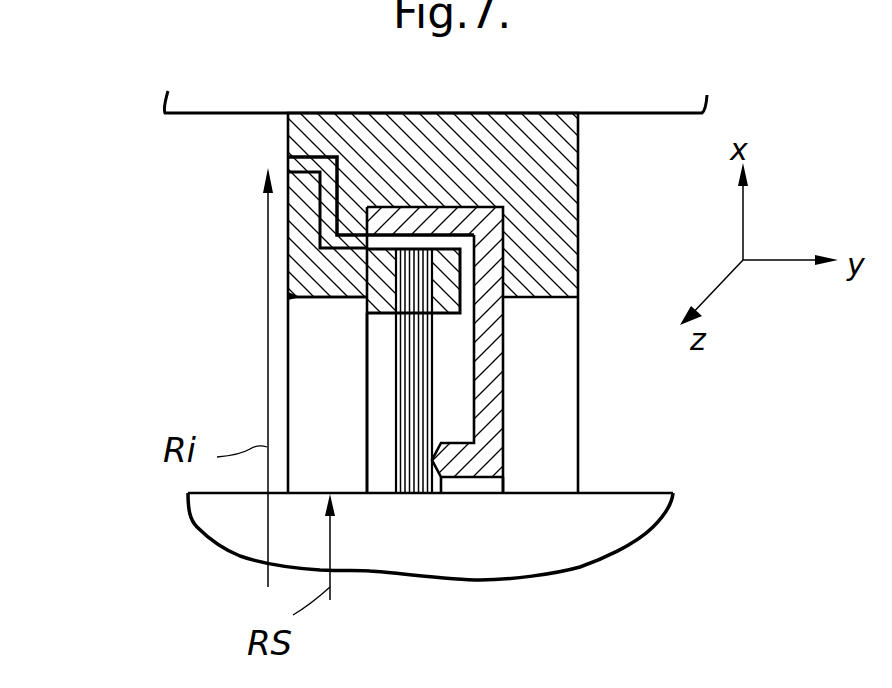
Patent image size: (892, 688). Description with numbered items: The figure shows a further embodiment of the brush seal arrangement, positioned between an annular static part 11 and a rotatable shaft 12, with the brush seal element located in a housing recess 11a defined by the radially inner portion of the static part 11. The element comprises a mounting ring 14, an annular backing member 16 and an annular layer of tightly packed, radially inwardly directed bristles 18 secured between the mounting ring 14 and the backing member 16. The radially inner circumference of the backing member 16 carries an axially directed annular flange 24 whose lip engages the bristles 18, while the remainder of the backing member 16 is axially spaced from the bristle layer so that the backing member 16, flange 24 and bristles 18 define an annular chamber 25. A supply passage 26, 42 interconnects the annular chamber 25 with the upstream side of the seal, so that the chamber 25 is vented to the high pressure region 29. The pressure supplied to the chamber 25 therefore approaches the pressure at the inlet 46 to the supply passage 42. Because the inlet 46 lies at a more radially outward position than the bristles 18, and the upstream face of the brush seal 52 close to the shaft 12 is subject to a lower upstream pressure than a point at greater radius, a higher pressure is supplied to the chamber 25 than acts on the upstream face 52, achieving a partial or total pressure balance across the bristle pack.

The annular static part 11 is at (507, 172).
The inlet 46 is at (300, 157).
The supply passage 42 is at (330, 202).
The housing recess 11a is at (300, 296).
The mounting ring 14 is at (378, 303).
The bristles 18 is at (396, 470).
The annular backing member 16 is at (490, 395).
The supply passage 26 is at (468, 273).
The annular chamber 25 is at (458, 413).
The annular flange 24 is at (443, 460).
The upstream face of the brush seal 52 is at (348, 428).
The rotatable shaft 12 is at (660, 493).
The high pressure region 29 is at (93, 320).